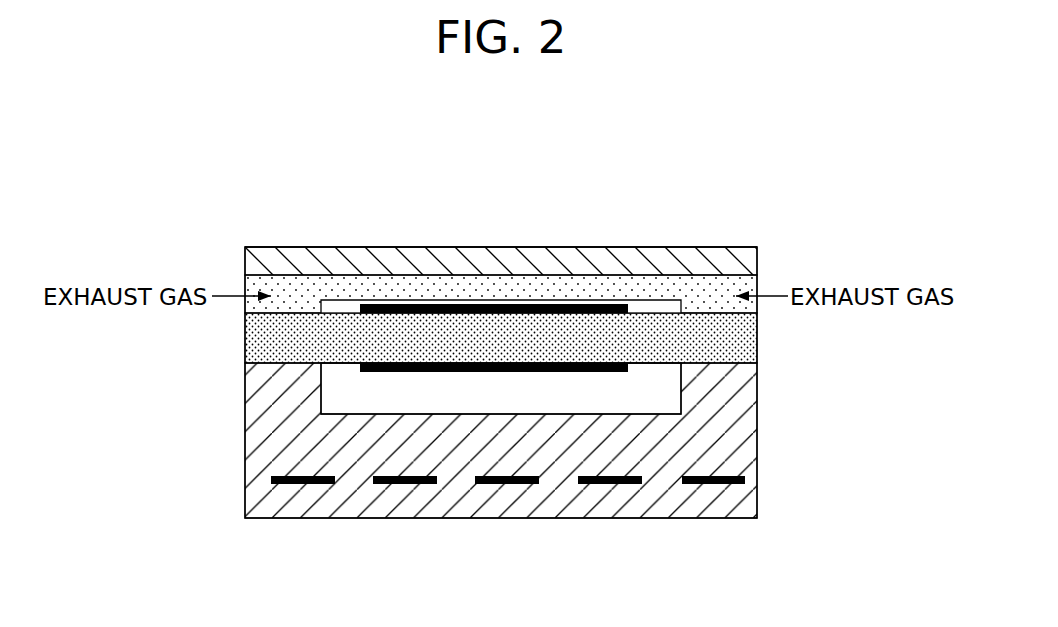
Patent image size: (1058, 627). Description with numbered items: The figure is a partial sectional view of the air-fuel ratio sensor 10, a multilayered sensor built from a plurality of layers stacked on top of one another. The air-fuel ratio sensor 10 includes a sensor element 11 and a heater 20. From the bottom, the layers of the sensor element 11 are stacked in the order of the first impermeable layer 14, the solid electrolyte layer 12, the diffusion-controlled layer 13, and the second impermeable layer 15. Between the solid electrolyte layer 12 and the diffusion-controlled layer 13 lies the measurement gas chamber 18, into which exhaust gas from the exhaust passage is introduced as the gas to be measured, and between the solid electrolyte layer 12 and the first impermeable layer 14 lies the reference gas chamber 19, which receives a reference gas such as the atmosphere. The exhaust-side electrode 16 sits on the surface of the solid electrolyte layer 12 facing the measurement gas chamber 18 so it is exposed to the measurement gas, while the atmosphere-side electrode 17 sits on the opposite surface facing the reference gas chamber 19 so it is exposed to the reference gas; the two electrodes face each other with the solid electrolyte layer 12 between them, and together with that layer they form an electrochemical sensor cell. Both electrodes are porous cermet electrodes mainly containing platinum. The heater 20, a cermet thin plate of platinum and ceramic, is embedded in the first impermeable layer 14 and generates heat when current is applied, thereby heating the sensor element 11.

The air-fuel ratio sensor 10 is at (212, 230).
The sensor element 11 is at (563, 247).
The solid electrolyte layer 12 is at (258, 341).
The diffusion-controlled layer 13 is at (503, 283).
The first impermeable layer 14 is at (255, 503).
The second impermeable layer 15 is at (267, 250).
The exhaust-side electrode 16 is at (395, 304).
The atmosphere-side electrode 17 is at (367, 373).
The measurement gas chamber 18 is at (337, 305).
The reference gas chamber 19 is at (453, 395).
The heater 20 is at (697, 486).